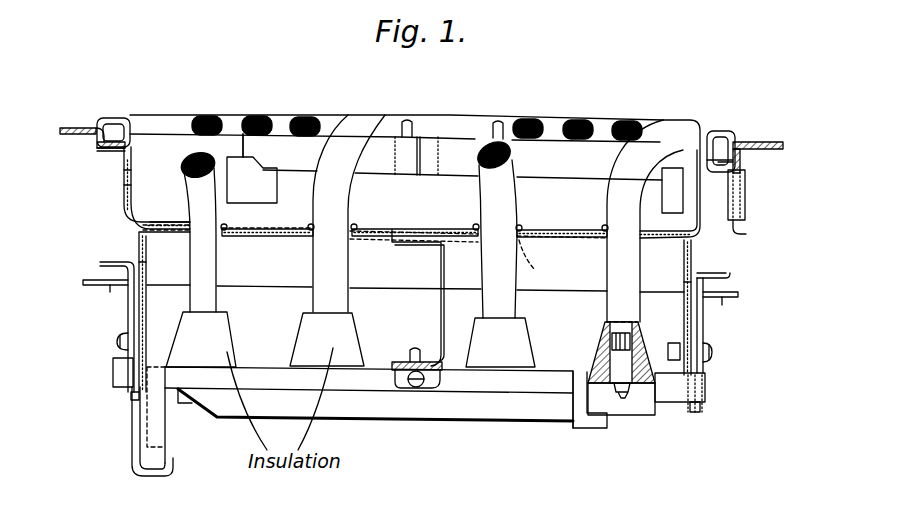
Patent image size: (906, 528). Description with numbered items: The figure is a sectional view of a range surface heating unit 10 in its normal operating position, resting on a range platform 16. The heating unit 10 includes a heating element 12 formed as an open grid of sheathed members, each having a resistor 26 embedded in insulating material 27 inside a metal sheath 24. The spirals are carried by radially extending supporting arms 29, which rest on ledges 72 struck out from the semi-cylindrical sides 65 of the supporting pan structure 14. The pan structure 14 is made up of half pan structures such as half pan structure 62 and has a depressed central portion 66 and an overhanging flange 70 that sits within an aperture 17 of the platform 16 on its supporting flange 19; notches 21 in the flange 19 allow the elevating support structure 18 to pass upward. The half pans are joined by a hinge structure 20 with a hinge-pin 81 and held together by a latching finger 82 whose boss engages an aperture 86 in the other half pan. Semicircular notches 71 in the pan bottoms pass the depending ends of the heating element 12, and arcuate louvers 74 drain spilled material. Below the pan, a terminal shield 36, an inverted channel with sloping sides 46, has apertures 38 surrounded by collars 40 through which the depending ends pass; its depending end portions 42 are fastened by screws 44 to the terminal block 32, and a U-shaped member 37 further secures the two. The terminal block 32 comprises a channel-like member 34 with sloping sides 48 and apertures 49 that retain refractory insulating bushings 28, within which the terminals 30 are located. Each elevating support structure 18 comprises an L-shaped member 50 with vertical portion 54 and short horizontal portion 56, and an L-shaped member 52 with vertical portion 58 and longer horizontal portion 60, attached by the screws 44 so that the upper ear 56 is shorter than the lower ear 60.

The range surface heating unit 10 is at (115, 120).
The heating element 12 is at (350, 125).
The supporting pan structure 14 is at (152, 130).
The range platform 16 is at (73, 136).
The apertures 17 is at (102, 120).
The retaining or elevating support structure 18 is at (100, 270).
The supporting flange 19 is at (100, 152).
The hinge structure 20 is at (777, 204).
The notches 21 is at (112, 150).
The metal sheath 24 is at (252, 116).
The resistor 26 is at (268, 116).
The insulating material 27 is at (255, 136).
The refractory insulating bushings 28 is at (355, 340).
The supporting arms 29 is at (288, 170).
The terminals 30 is at (617, 378).
The terminal block 32 is at (357, 400).
The channel-like member 34 is at (532, 400).
The terminal shield 36 is at (276, 278).
The U-shaped member 37 is at (441, 279).
The apertures 38 is at (226, 226).
The collars 40 is at (311, 224).
The depending end portions 42 is at (144, 272).
The screws 44 is at (116, 342).
The sloping sides 46 is at (300, 280).
The sloping sides 48 is at (233, 408).
The apertures 49 is at (582, 368).
The L-shaped member 50 is at (113, 260).
The L-shaped member 52 is at (90, 287).
The vertical portion 54 is at (134, 398).
The horizontal portion 56 is at (124, 261).
The vertical portion 58 is at (131, 396).
The horizontal portion 60 is at (416, 304).
The half pan structure 62 is at (690, 142).
The semi-cylindrical sides 65 is at (131, 190).
The depressed central portion 66 is at (690, 224).
The overhanging lip or flange 70 is at (725, 135).
The semicircular notches 71 is at (182, 220).
The ledges 72 is at (238, 160).
The arcuate louvers 74 is at (375, 252).
The hinge-pin 81 is at (741, 230).
The elongated finger 82 is at (124, 195).
The aperture 86 is at (131, 178).